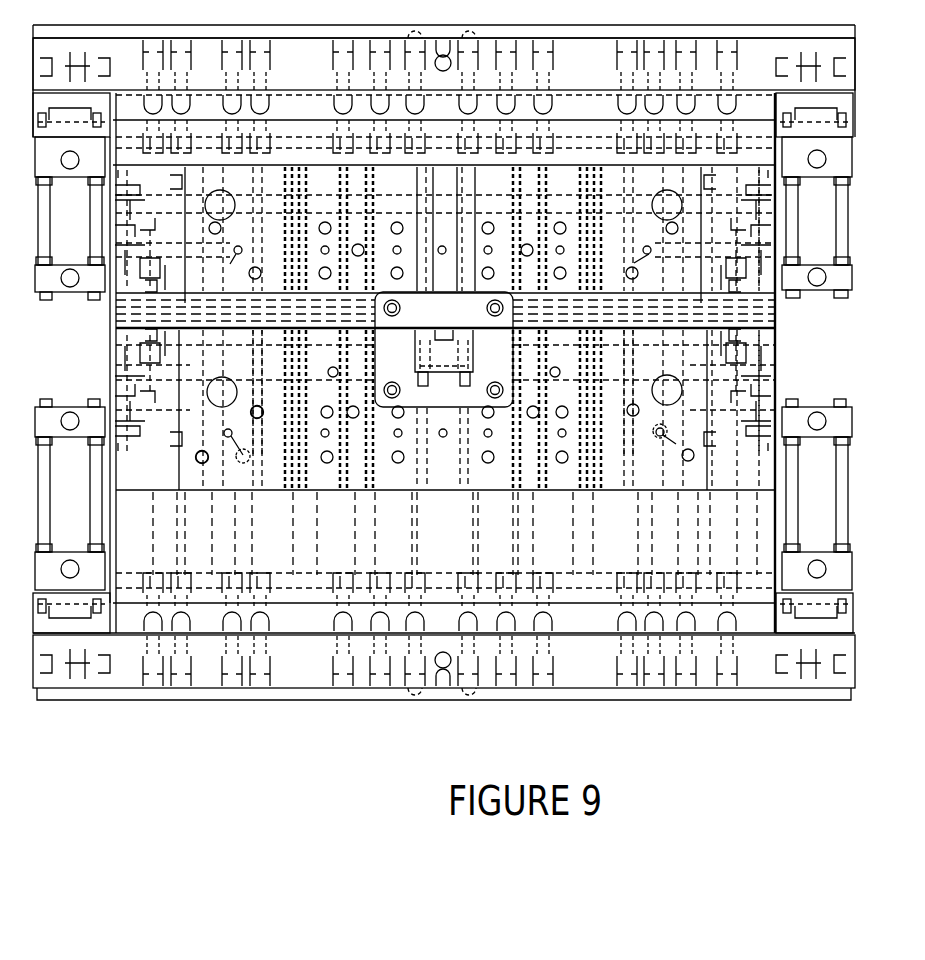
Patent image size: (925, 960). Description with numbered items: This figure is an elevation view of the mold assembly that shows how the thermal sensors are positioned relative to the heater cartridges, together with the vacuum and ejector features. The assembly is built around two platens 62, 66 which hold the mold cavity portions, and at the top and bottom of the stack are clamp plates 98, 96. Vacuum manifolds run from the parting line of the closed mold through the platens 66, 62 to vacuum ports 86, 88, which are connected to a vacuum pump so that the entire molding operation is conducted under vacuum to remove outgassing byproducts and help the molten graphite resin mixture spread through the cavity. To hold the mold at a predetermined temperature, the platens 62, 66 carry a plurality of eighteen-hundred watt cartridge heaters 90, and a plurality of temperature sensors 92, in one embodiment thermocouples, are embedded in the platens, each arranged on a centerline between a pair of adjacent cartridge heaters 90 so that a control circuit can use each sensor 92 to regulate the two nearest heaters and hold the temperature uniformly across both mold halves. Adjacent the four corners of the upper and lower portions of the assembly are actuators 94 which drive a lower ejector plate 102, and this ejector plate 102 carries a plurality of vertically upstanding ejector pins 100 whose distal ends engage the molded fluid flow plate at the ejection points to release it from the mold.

The platen 62 is at (445, 410).
The platen 66 is at (445, 247).
The vacuum port 86 is at (672, 195).
The vacuum port 88 is at (677, 403).
The cartridge heater 90 is at (256, 419).
The temperature sensor 92 is at (640, 253).
The actuator 94 is at (443, 363).
The clamp plate 96 is at (444, 667).
The clamp plate 98 is at (444, 64).
The ejector pin 100 is at (512, 522).
The lower ejector plate 102 is at (455, 533).